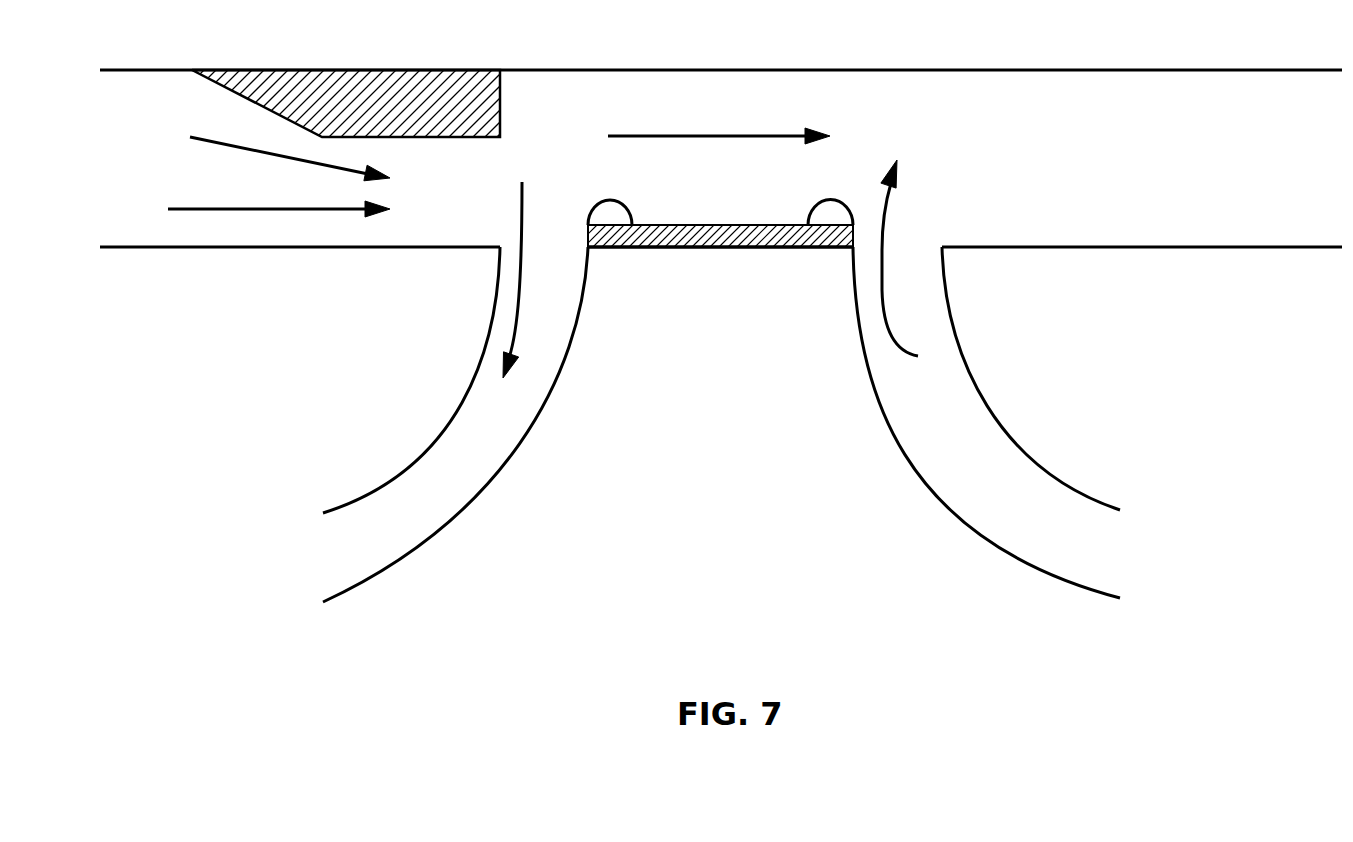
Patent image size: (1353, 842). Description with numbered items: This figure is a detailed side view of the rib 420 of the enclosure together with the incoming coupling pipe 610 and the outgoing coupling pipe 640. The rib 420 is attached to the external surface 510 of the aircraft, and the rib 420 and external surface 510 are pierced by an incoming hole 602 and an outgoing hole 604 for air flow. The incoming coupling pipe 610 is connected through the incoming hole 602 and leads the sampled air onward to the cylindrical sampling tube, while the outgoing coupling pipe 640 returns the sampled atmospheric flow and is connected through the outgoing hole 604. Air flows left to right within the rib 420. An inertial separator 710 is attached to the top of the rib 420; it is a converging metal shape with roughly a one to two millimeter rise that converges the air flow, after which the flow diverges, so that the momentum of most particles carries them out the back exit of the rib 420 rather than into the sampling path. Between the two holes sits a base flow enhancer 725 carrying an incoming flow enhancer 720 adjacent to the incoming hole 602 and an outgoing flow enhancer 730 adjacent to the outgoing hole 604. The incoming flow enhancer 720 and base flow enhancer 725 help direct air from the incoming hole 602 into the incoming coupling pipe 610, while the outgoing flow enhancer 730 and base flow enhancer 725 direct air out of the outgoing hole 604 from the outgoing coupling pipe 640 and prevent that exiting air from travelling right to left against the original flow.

The rib 420 is at (1205, 70).
The external surface 510 is at (1042, 247).
The incoming hole 602 is at (533, 247).
The outgoing hole 604 is at (897, 245).
The incoming coupling pipe 610 is at (532, 465).
The outgoing coupling pipe 640 is at (1032, 478).
The inertial separator 710 is at (433, 137).
The incoming flow enhancer 720 is at (632, 222).
The base flow enhancer 725 is at (735, 249).
The outgoing flow enhancer 730 is at (808, 222).